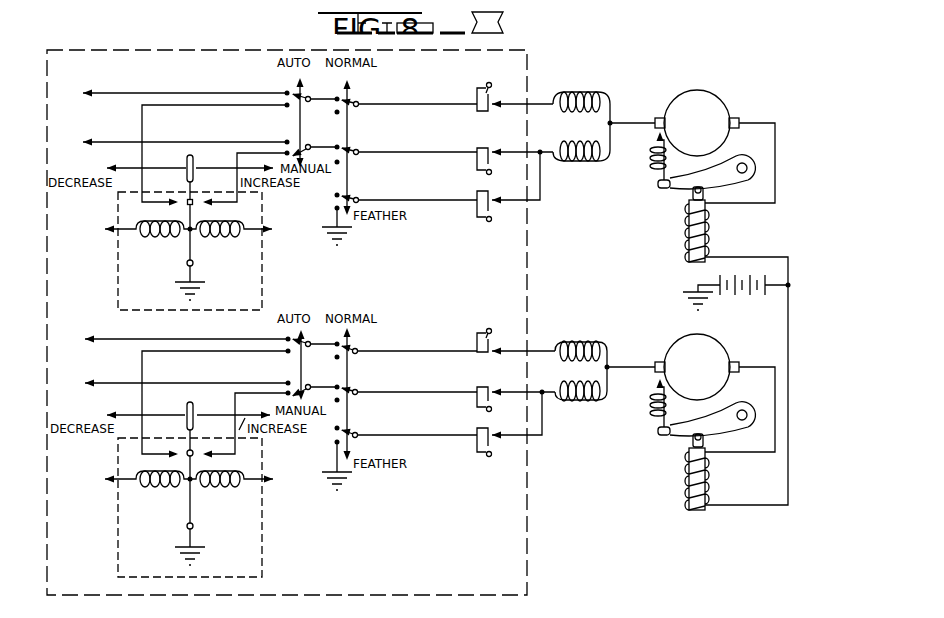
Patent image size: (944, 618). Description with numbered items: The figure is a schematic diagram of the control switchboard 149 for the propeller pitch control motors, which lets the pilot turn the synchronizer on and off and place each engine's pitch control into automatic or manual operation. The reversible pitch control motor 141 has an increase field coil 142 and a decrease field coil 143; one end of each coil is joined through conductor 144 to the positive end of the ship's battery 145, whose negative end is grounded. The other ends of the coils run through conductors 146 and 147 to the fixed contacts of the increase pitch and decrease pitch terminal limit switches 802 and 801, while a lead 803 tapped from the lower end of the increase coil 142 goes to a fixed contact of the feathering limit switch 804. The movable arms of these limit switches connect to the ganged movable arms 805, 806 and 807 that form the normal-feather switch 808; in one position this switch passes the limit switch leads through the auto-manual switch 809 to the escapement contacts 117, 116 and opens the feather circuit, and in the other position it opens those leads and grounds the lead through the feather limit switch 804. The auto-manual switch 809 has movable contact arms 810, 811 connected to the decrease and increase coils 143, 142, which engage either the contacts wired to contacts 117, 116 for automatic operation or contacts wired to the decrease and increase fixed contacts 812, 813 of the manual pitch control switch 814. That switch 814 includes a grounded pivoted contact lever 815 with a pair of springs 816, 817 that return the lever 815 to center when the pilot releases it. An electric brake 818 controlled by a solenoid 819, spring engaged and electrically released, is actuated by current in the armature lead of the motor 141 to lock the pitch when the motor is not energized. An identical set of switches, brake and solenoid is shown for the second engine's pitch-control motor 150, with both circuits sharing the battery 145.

The control switchboard 149 is at (207, 50).
The contact 117 is at (182, 85).
The contact 116 is at (182, 133).
The auto-manual switch 809 is at (302, 119).
The movable contact arm 810 is at (311, 106).
The movable contact arm 811 is at (298, 151).
The normal-feather switch 808 is at (348, 90).
The movable arm 805 is at (357, 107).
The movable arm 806 is at (357, 155).
The movable arm 807 is at (357, 197).
The decrease pitch terminal limit switch 801 is at (494, 83).
The increase pitch terminal limit switch 802 is at (488, 148).
The feathering limit switch 804 is at (491, 198).
The lead 803 is at (541, 185).
The conductor 147 is at (498, 101).
The conductor 146 is at (500, 150).
The decrease field coil 143 is at (564, 92).
The increase field coil 142 is at (562, 150).
The pitch control motor 141 is at (700, 93).
The conductor 144 is at (745, 122).
The electric brake 818 is at (722, 176).
The solenoid 819 is at (688, 225).
The ship's battery 145 is at (727, 298).
The pitch-control motor 150 is at (682, 336).
The pivoted contact lever 815 is at (195, 165).
The decrease fixed contact 812 is at (168, 202).
The increase fixed contact 813 is at (216, 205).
The manual pitch control switch 814 is at (262, 263).
The spring 816 is at (147, 242).
The spring 817 is at (242, 243).